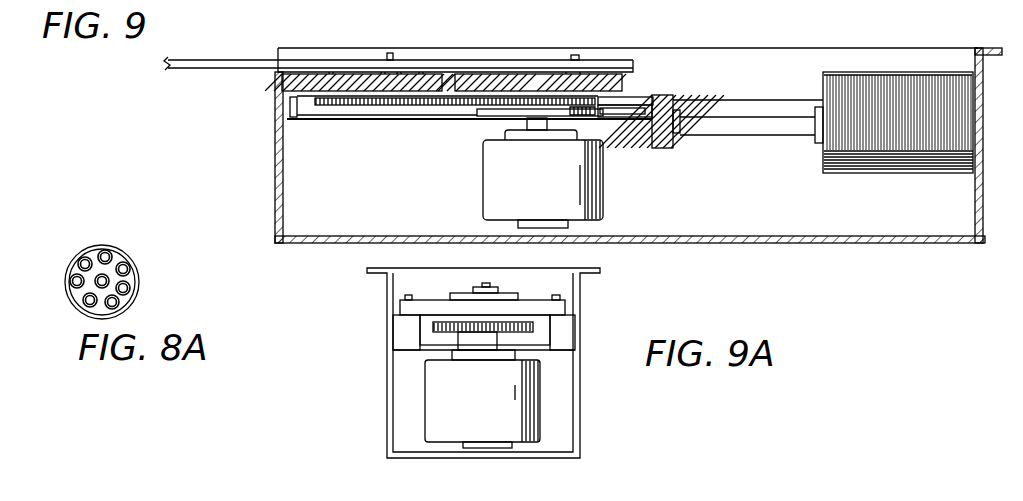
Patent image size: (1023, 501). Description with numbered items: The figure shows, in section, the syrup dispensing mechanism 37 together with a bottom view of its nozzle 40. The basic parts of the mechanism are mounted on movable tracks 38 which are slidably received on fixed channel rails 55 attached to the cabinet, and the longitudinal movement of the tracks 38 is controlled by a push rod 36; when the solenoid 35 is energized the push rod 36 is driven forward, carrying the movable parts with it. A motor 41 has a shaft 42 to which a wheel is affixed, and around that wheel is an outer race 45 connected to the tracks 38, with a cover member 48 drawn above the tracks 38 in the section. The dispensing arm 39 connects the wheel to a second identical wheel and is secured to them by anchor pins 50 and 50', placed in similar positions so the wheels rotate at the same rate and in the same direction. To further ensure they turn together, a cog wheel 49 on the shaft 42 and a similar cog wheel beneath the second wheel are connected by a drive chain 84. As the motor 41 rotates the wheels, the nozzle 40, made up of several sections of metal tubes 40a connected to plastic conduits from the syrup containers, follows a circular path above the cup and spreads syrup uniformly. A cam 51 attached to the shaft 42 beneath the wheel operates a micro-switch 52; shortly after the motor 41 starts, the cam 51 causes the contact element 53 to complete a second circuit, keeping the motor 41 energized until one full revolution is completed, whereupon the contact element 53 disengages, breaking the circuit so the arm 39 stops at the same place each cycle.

In FIG. 9, the solenoid 35 is at (860, 172).
In FIG. 9, the push rod 36 is at (753, 118).
In FIG. 9, the syrup dispensing mechanism 37 is at (834, 39).
In FIG. 9A, the syrup dispensing mechanism 37 is at (597, 305).
In FIG. 9, the movable tracks 38 is at (357, 112).
In FIG. 9A, the movable tracks 38 is at (420, 333).
In FIG. 9, the arm 39 is at (258, 58).
In FIG. 8A, the nozzle 40 is at (131, 257).
In FIG. 8A, the metal tubes 40a is at (102, 251).
In FIG. 9, the motor 41 is at (548, 184).
In FIG. 9A, the motor 41 is at (483, 421).
In FIG. 9, the motor shaft 42 is at (503, 133).
In FIG. 9, the outer race 45 is at (523, 72).
In FIG. 9, the cover plate 48 is at (427, 74).
In FIG. 9A, the cover plate 48 is at (527, 300).
In FIG. 9, the cog wheel 49 is at (410, 100).
In FIG. 9A, the cog wheel 49 is at (458, 337).
In FIG. 9, the anchor pin 50 is at (595, 38).
In FIG. 9, the anchor pin 50' is at (375, 38).
In FIG. 9, the cam 51 is at (463, 112).
In FIG. 9, the micro-switch 52 is at (637, 97).
In FIG. 9, the contact element 53 is at (613, 113).
In FIG. 9, the fixed channel rails 55 is at (773, 48).
In FIG. 9A, the fixed channel rails 55 is at (395, 320).
In FIG. 9, the drive chain 84 is at (437, 100).
In FIG. 9A, the drive chain 84 is at (537, 333).